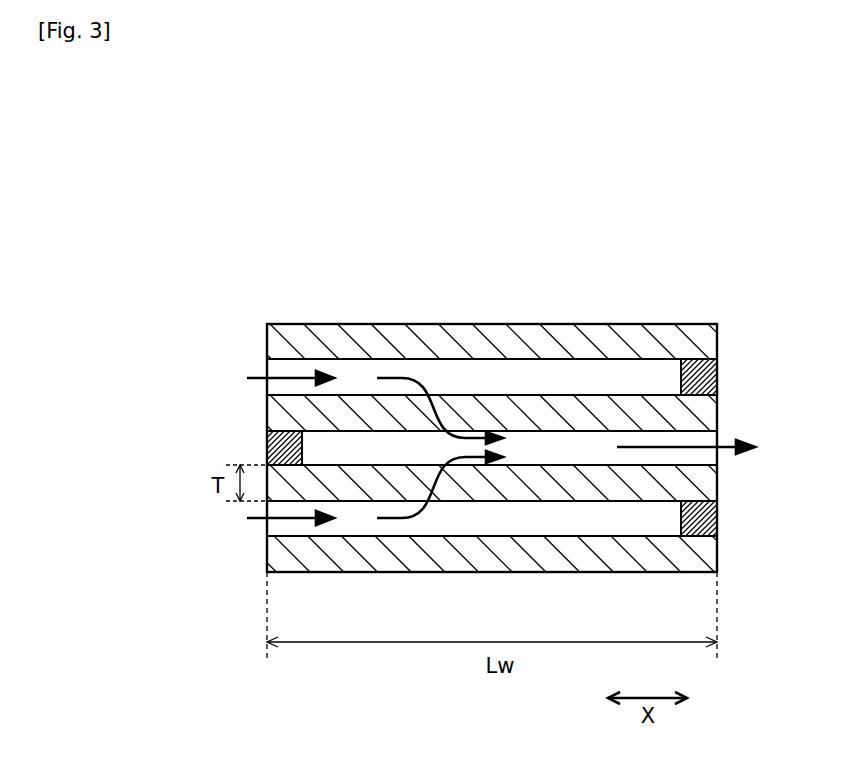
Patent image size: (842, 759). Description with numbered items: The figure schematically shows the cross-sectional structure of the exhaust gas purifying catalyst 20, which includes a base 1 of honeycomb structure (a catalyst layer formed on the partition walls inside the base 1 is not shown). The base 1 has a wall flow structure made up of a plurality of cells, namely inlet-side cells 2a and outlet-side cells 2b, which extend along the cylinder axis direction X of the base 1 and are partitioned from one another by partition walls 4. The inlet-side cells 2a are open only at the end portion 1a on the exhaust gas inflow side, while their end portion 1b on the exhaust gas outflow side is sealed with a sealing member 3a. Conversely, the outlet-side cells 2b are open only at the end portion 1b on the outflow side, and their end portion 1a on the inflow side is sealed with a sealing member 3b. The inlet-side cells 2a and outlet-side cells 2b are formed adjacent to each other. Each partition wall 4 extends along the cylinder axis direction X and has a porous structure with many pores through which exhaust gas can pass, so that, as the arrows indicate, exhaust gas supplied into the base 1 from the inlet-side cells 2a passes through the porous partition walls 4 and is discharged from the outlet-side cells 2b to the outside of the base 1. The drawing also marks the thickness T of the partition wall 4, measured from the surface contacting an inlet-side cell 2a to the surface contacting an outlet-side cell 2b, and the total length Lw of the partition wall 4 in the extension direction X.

The base 1 is at (656, 324).
The end portion on the exhaust gas inflow side 1a is at (267, 337).
The end portion on the exhaust gas outflow side 1b is at (717, 483).
The inlet-side cell 2a is at (491, 377).
The outlet-side cell 2b is at (571, 448).
The sealing member 3a is at (717, 373).
The sealing member 3b is at (267, 443).
The partition wall 4 is at (365, 402).
The exhaust gas purifying catalyst 20 is at (738, 250).